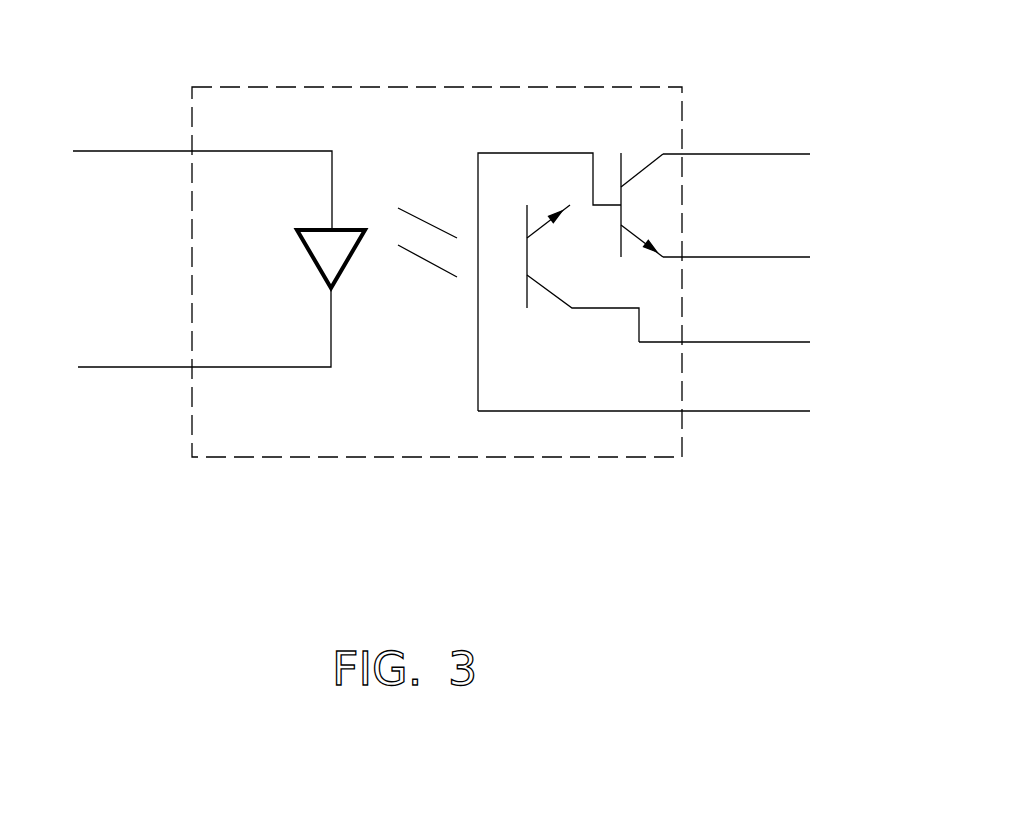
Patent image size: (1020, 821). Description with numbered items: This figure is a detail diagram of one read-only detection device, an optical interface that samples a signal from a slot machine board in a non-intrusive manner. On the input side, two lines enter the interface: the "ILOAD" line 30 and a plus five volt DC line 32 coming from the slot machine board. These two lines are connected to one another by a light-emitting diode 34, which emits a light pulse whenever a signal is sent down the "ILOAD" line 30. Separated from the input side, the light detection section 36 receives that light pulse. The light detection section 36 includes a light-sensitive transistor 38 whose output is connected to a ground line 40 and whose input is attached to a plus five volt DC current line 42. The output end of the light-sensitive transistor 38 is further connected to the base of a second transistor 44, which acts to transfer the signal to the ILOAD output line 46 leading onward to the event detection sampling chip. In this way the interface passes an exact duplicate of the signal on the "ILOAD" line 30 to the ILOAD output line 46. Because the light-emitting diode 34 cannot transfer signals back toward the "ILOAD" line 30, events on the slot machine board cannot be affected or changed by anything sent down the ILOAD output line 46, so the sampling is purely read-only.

The "ILOAD" line 30 is at (148, 367).
The +5 volt DC line 32 is at (163, 150).
The light-emitting diode 34 is at (310, 258).
The light detection section 36 is at (387, 310).
The light-sensitive transistor 38 is at (540, 263).
The ground line 40 is at (760, 411).
The +5 volt DC current line 42 is at (773, 342).
The second transistor 44 is at (632, 205).
The ILOAD output line 46 is at (773, 153).